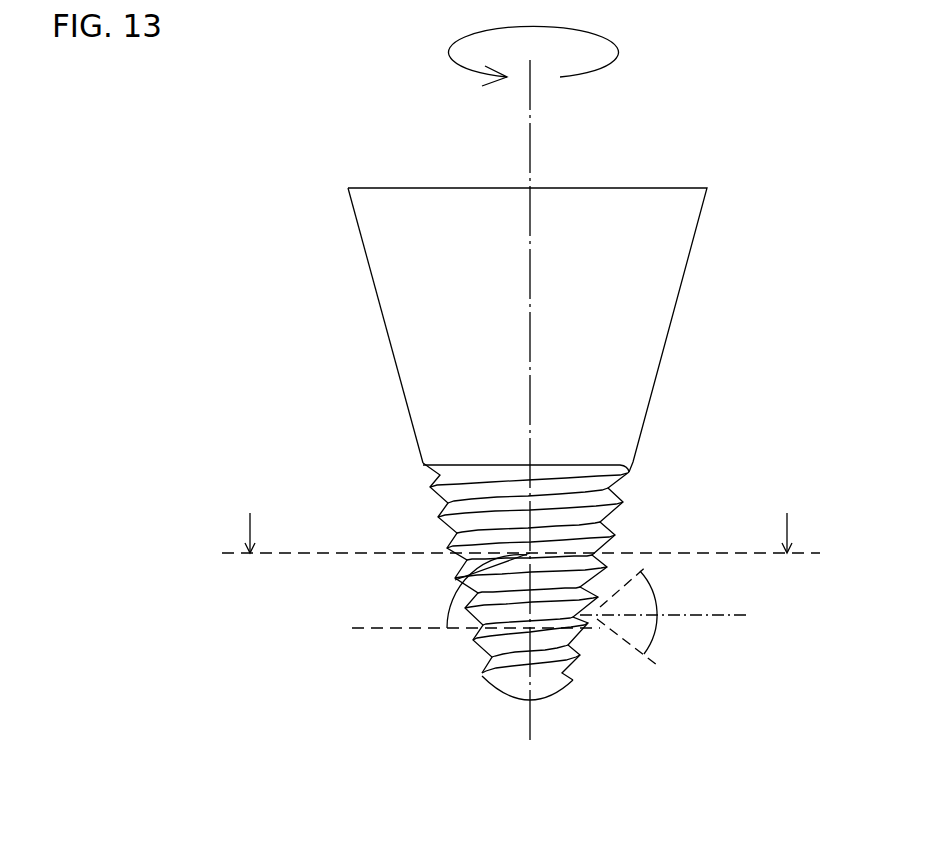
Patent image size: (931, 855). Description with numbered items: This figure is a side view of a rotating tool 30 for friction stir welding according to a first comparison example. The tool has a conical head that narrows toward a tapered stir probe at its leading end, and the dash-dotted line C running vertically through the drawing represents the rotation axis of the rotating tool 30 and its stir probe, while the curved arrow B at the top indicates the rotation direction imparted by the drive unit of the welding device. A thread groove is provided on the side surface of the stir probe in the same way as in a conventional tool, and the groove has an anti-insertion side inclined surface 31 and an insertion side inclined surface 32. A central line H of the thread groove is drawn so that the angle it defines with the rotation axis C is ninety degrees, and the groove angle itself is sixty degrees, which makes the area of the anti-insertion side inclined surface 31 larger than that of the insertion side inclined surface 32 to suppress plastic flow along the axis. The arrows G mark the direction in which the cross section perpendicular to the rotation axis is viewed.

The rotating tool 30 is at (484, 449).
The anti-insertion side inclined surface 31 is at (596, 600).
The insertion side inclined surface 32 is at (591, 625).
The rotation direction arrow B is at (618, 50).
The rotation axis C is at (530, 148).
The viewing direction of the cross section G is at (521, 517).
The central line of the thread groove H is at (372, 628).